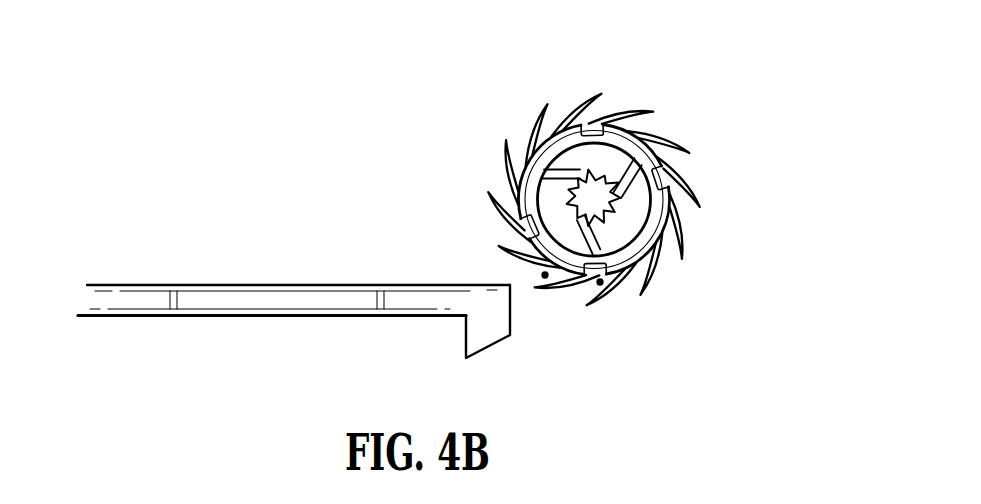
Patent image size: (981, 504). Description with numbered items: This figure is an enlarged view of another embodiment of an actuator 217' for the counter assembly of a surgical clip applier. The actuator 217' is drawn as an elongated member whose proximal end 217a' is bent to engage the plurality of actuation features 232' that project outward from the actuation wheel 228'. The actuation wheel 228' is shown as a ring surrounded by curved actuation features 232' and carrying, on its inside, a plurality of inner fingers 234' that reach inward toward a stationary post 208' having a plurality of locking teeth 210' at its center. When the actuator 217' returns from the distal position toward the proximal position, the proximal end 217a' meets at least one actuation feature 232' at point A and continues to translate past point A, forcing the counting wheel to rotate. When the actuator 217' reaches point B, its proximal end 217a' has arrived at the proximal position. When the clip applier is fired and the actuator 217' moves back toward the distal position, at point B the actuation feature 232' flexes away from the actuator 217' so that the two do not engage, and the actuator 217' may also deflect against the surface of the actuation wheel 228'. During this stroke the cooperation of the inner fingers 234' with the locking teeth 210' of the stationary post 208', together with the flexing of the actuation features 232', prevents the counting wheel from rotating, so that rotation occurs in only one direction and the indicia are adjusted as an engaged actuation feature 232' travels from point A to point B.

The actuator 217' is at (325, 344).
The proximal end 217a' is at (519, 344).
The actuation wheel 228' is at (599, 183).
The actuation features 232' is at (628, 199).
The stationary post 208' is at (647, 201).
The inner fingers 234' is at (594, 137).
The locking teeth 210' is at (524, 172).
The point "A" A is at (545, 275).
The point "B" B is at (600, 282).